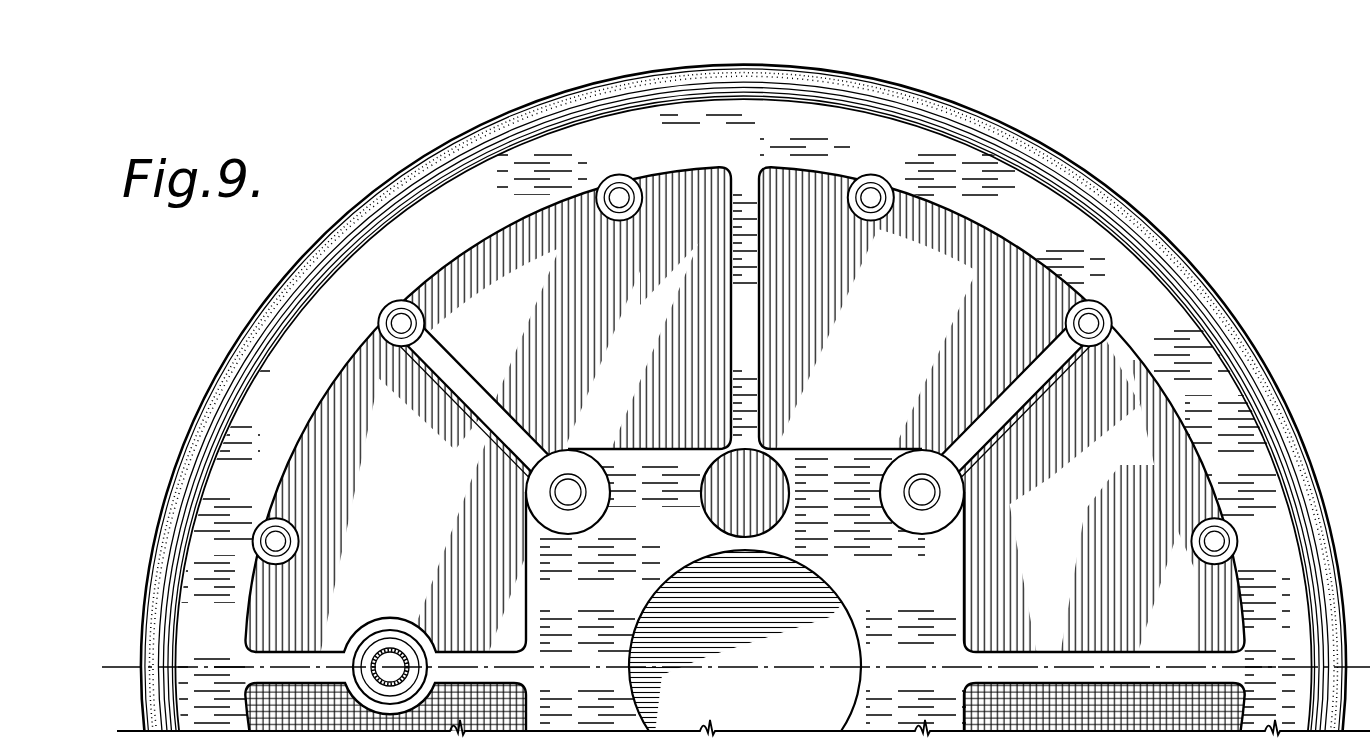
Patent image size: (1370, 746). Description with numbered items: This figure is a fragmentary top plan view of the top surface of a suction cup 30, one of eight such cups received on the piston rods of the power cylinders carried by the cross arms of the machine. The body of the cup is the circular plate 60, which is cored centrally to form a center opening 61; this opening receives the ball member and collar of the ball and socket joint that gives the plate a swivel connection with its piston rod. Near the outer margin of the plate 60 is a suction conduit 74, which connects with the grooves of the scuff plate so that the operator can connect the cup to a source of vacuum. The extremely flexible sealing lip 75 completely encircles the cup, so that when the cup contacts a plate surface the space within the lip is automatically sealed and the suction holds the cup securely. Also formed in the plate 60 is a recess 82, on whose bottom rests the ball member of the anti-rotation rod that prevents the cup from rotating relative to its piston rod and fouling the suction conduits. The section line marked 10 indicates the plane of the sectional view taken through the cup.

The section line 10- 10 is at (116, 688).
The suction cup 30 is at (968, 266).
The circular plate 60 is at (495, 278).
The center opening 61 is at (856, 633).
The suction conduit 74 is at (408, 655).
The flexible sealing lip 75 is at (1232, 342).
The recess 82 is at (750, 490).